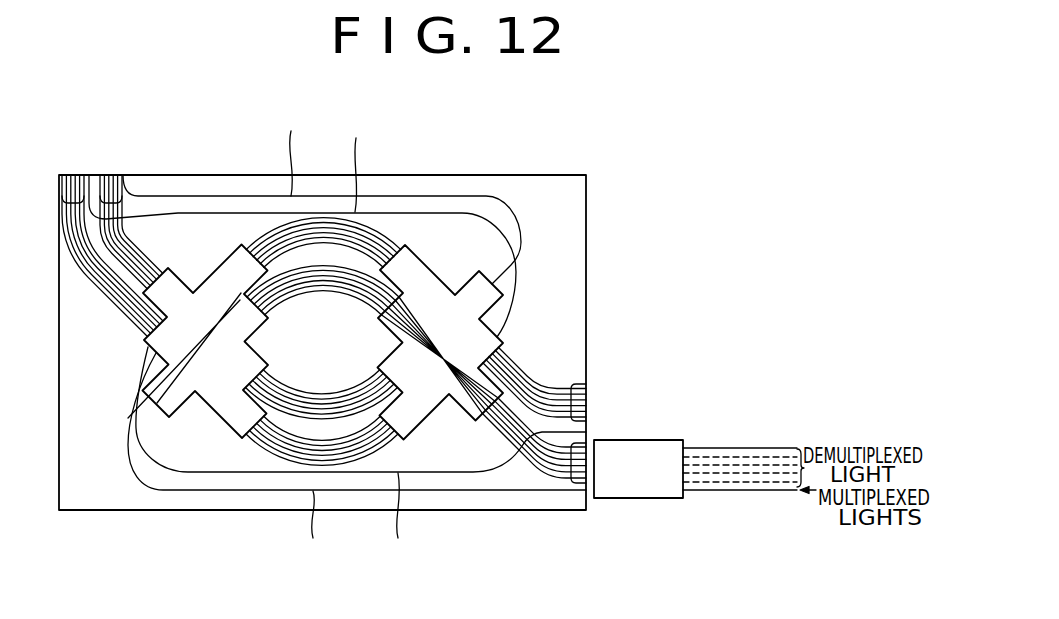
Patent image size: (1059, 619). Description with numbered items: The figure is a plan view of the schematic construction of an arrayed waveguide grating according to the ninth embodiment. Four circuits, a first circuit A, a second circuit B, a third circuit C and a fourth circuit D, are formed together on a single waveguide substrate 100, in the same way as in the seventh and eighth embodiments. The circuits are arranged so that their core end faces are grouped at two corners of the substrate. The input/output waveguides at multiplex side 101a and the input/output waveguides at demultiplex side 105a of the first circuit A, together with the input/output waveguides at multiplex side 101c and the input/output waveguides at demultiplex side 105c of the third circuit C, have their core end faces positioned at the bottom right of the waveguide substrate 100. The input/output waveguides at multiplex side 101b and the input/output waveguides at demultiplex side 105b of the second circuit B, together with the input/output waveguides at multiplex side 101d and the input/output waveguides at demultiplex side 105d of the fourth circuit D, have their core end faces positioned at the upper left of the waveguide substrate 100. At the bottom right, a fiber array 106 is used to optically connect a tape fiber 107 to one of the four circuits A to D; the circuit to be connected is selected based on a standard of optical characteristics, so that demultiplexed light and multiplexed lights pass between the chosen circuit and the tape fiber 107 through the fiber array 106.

The waveguide substrate 100 is at (532, 195).
The input/output waveguides at multiplex side 101a is at (517, 491).
The input/output waveguides at multiplex side 101b is at (128, 175).
The input/output waveguides at multiplex side 101c is at (586, 428).
The input/output waveguides at multiplex side 101d is at (93, 173).
The input/output waveguides at demultiplex side 105a is at (586, 438).
The input/output waveguides at demultiplex side 105b is at (116, 174).
The input/output waveguides at demultiplex side 105c is at (586, 365).
The input/output waveguides at demultiplex side 105d is at (72, 174).
The fiber array 106 is at (640, 498).
The tape fiber 107 is at (740, 448).